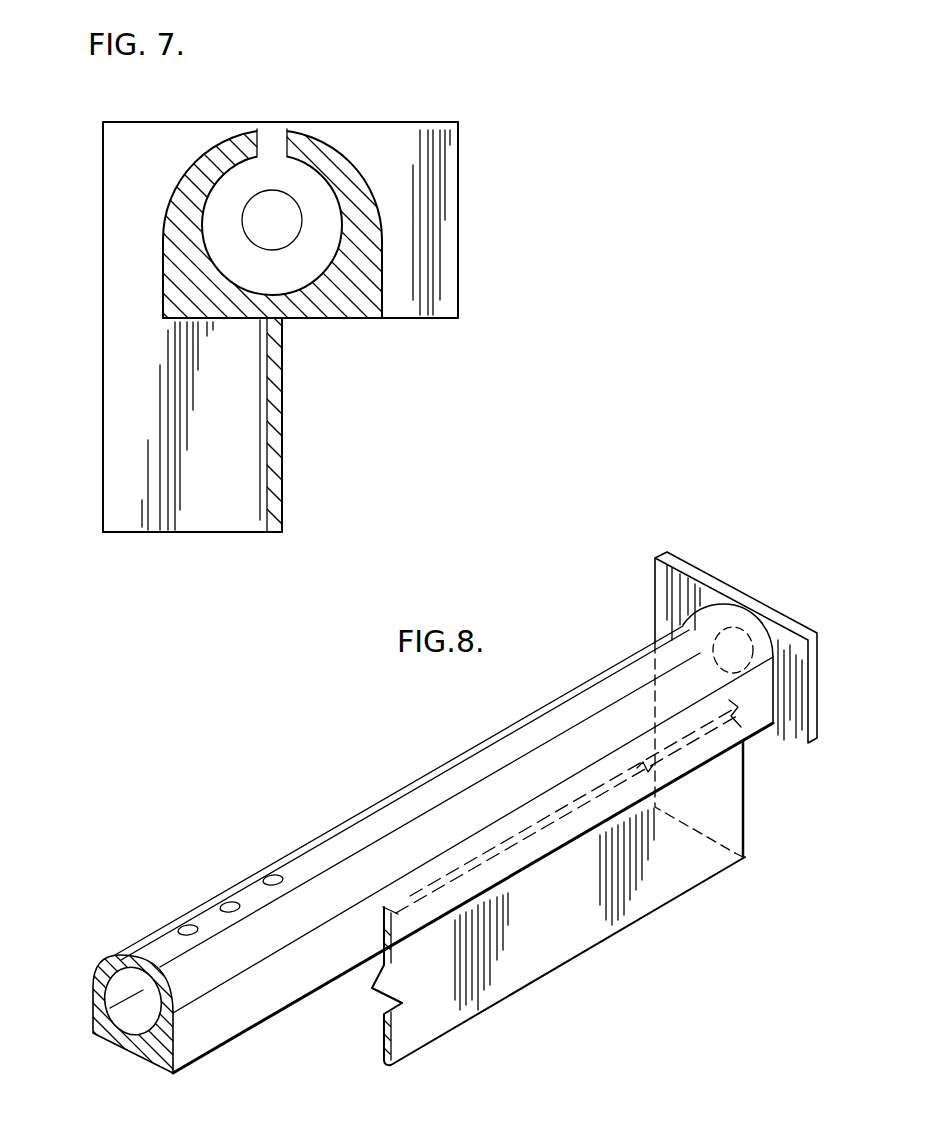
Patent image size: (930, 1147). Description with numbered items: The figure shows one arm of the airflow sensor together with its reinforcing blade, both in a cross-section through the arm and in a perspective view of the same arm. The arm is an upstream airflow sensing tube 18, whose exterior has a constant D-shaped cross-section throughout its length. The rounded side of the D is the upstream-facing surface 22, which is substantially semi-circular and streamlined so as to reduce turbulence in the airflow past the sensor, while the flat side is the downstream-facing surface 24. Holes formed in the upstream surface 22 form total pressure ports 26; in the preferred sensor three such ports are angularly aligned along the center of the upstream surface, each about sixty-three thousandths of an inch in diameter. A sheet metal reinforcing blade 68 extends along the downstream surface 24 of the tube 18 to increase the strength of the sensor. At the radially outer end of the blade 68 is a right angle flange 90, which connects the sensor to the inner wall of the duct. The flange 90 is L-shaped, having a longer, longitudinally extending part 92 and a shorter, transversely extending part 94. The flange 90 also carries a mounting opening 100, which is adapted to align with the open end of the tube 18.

In FIG. 7, the upstream airflow sensing tube 18 is at (284, 237).
In FIG. 8, the upstream airflow sensing tube 18 is at (424, 809).
In FIG. 7, the upstream-facing surface 22 is at (193, 166).
In FIG. 7, the downstream-facing surface 24 is at (332, 320).
In FIG. 8, the total pressure port 26 is at (185, 924).
In FIG. 7, the reinforcing blade 68 is at (292, 450).
In FIG. 8, the reinforcing blade 68 is at (547, 976).
In FIG. 7, the right angle flange 90 is at (244, 294).
In FIG. 8, the right angle flange 90 is at (701, 678).
In FIG. 7, the longitudinally extending part 92 is at (103, 342).
In FIG. 8, the longitudinally extending part 92 is at (655, 592).
In FIG. 7, the transversely extending part 94 is at (432, 121).
In FIG. 8, the transversely extending part 94 is at (707, 574).
In FIG. 7, the mounting opening 100 is at (255, 234).
In FIG. 8, the mounting opening 100 is at (768, 623).